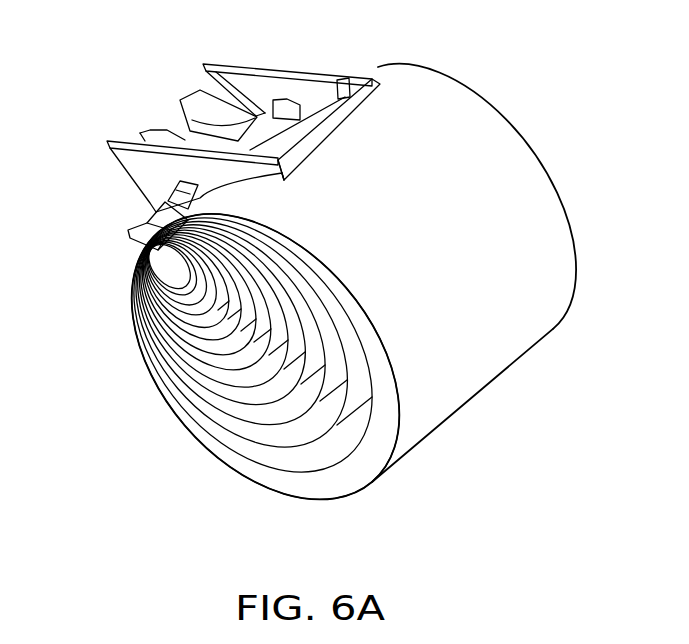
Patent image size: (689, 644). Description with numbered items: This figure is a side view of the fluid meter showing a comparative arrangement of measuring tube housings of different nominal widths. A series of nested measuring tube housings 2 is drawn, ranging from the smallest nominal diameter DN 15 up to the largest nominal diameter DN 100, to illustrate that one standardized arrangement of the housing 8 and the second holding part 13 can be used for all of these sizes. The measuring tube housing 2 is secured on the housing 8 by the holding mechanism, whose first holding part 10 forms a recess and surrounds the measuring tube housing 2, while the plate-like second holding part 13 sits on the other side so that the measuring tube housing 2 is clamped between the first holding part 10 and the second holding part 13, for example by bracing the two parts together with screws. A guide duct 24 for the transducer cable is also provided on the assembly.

The measuring tube housing 2 is at (188, 306).
The housing 8 is at (310, 86).
The first holding part 10 is at (498, 123).
The second holding part 13 is at (144, 226).
The guide duct (transducer cable) 24 is at (179, 96).
The nominal diameter DN 15 is at (143, 283).
The nominal diameter DN 100 is at (328, 486).